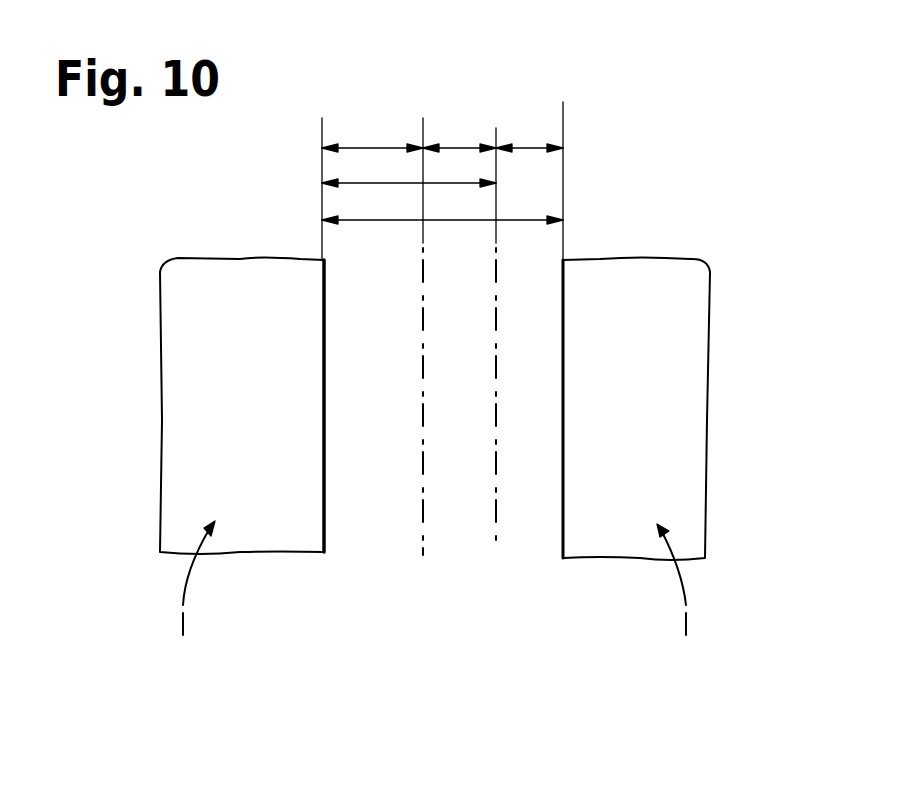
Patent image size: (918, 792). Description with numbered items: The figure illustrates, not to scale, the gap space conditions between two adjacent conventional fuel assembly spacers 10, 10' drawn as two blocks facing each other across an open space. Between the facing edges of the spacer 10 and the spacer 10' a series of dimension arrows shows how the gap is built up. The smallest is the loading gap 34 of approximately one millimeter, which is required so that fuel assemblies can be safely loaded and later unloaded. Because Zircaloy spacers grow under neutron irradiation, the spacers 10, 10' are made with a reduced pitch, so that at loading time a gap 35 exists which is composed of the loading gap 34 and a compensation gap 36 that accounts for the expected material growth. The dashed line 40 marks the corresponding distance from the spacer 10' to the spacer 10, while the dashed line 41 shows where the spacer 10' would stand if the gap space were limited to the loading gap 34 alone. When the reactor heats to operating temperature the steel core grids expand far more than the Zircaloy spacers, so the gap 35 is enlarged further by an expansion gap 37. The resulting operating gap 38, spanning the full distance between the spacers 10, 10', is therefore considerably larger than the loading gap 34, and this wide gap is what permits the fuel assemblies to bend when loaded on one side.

The spacer 10 is at (242, 415).
The spacer 10' is at (636, 415).
The loading gap 34 is at (367, 147).
The gap 35 is at (373, 183).
The compensation gap 36 is at (462, 147).
The expansion gap 37 is at (530, 147).
The operating gap 38 is at (397, 221).
The dashed line 40 is at (497, 547).
The dashed line 41 is at (423, 555).